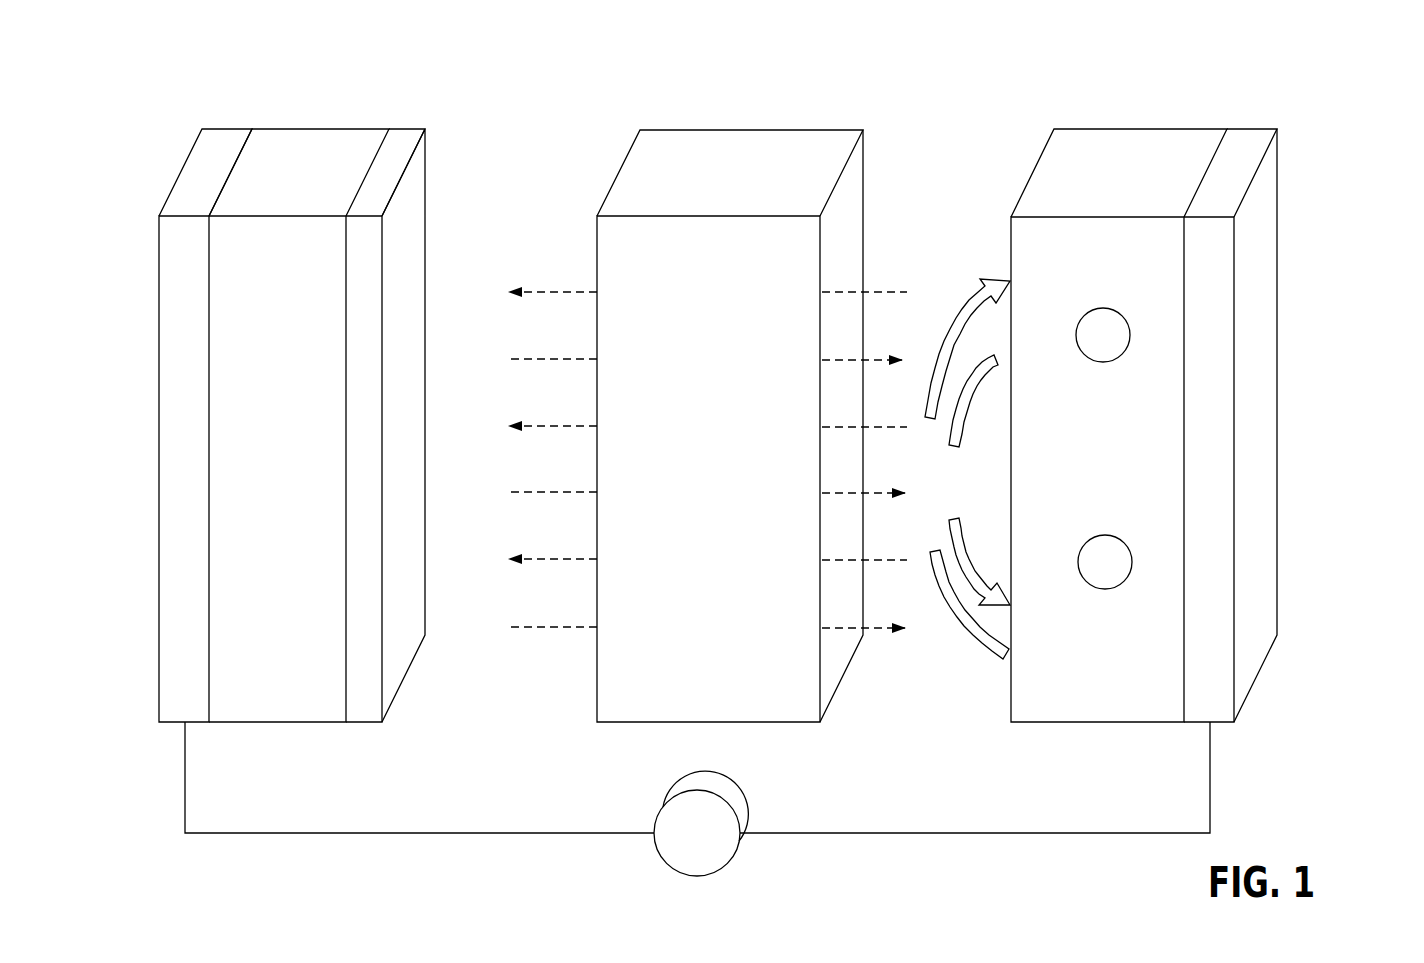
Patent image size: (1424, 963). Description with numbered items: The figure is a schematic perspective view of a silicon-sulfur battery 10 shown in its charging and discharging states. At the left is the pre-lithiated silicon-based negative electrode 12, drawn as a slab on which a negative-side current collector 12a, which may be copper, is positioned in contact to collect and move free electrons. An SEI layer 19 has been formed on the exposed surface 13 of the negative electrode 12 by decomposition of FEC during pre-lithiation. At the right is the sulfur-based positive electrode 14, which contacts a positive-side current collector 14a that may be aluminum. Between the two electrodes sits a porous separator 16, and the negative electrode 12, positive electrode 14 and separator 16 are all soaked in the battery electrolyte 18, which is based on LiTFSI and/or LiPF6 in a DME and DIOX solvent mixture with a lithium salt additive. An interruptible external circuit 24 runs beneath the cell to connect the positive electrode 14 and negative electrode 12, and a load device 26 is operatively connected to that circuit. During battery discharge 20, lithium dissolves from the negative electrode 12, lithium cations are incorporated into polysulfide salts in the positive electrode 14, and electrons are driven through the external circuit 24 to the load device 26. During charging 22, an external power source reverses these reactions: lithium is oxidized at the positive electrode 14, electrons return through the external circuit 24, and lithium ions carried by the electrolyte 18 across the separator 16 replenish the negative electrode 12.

The silicon-sulfur battery 10 is at (1300, 70).
The silicon-based negative electrode 12 is at (308, 452).
The negative-side current collector 12a is at (185, 570).
The exposed surface 13 is at (372, 162).
The positive electrode 14 is at (1118, 452).
The positive-side current collector 14a is at (1252, 247).
The porous separator 16 is at (700, 172).
The battery electrolyte 18 is at (315, 180).
The SEI layer 19 is at (360, 672).
The battery discharge 20 is at (870, 355).
The charging 22 is at (562, 288).
The external circuit 24 is at (1003, 834).
The load device 26 is at (713, 850).